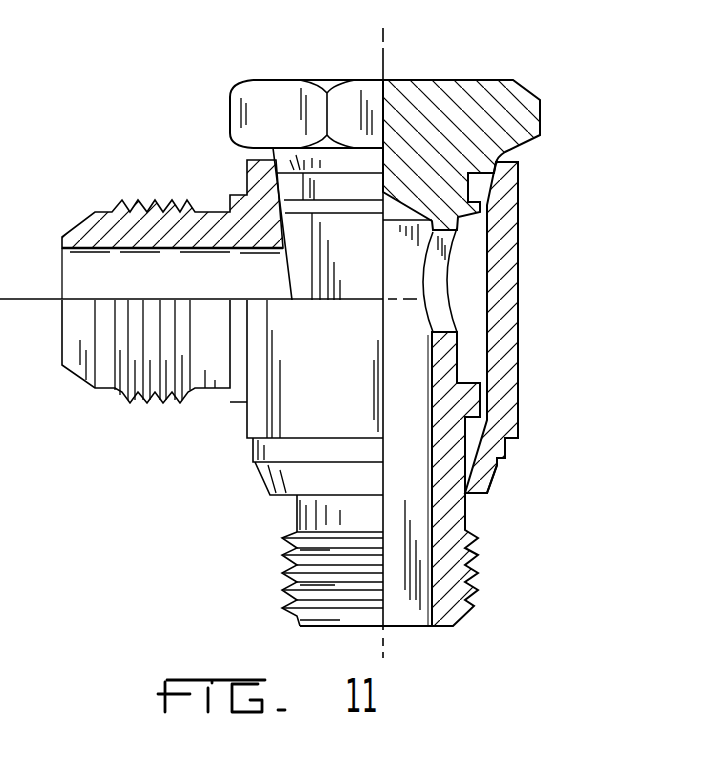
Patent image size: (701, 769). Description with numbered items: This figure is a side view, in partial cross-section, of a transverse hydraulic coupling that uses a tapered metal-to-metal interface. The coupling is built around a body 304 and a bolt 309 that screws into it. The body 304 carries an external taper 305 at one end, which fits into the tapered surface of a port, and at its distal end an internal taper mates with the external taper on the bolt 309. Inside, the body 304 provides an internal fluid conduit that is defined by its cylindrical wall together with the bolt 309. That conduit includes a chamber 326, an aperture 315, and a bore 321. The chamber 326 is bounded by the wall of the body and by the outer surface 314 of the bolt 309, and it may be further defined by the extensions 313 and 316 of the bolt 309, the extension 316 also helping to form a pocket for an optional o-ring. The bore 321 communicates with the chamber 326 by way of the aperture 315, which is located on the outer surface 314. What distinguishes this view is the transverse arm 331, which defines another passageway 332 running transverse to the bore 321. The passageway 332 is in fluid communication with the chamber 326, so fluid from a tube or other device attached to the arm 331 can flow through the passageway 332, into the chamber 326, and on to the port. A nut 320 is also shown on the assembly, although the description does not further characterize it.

The bolt 309 is at (512, 72).
The nut 320 is at (348, 98).
The arm 331 is at (108, 222).
The passageway 332 is at (150, 248).
The extension 316 is at (490, 212).
The chamber 326 is at (468, 265).
The body 304 is at (535, 284).
The aperture 315 is at (440, 312).
The outer surface 314 is at (457, 360).
The extension 313 is at (470, 402).
The external taper 305 is at (487, 478).
The bore 321 is at (410, 580).